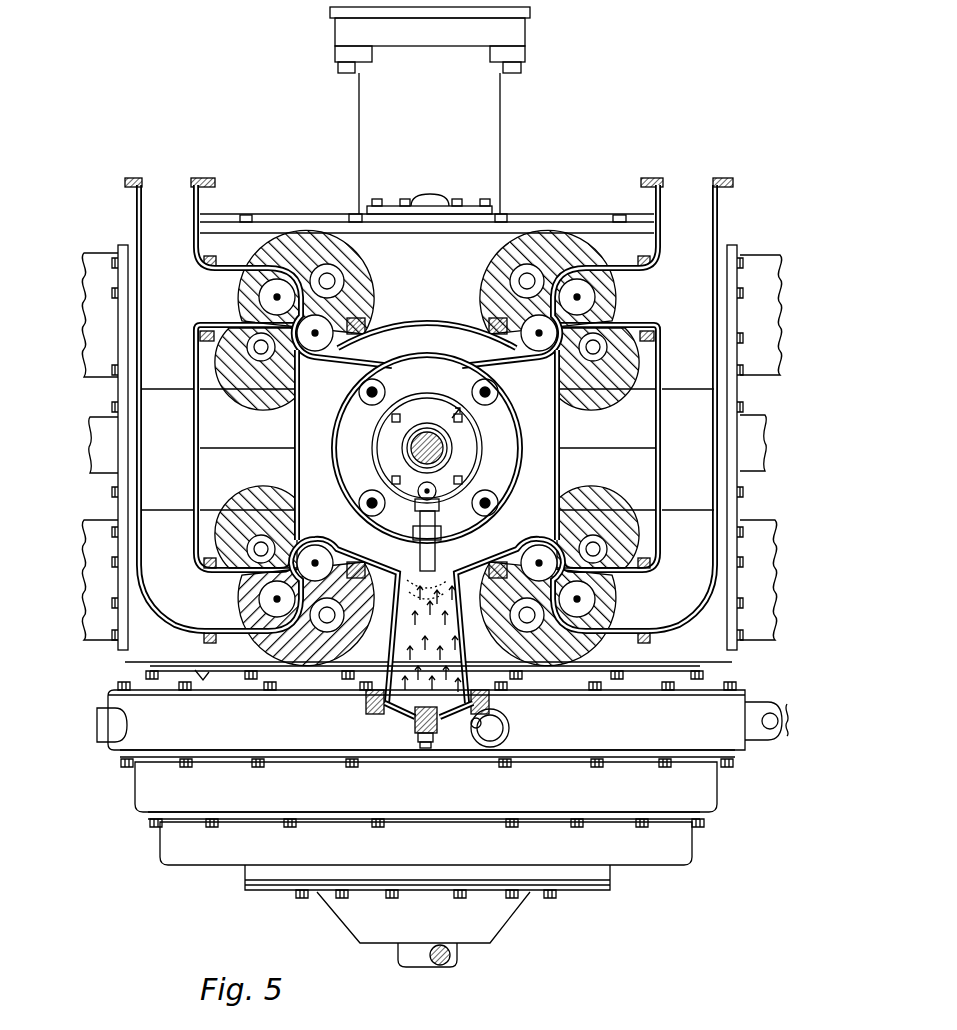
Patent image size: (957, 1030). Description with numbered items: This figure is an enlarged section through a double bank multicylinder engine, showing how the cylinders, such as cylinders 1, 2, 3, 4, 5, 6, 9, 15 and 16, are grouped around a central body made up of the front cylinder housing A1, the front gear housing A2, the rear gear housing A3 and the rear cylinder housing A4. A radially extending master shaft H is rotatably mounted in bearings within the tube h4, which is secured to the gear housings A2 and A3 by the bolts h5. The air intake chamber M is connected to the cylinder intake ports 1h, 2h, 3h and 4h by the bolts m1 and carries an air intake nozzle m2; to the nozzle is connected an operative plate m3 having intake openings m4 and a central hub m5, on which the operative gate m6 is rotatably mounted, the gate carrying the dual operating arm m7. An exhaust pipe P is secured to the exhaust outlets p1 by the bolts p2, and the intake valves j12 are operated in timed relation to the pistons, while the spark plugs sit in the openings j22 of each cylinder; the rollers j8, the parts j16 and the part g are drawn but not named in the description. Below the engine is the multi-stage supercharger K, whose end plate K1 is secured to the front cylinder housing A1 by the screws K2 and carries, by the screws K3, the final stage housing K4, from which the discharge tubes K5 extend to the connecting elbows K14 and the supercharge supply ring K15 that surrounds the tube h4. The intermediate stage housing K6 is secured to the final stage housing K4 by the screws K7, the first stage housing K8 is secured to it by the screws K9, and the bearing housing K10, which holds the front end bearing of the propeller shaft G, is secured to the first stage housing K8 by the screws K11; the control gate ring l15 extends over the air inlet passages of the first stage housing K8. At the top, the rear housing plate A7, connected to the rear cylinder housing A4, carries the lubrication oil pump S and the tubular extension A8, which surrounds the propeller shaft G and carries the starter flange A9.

The starter flange A9 is at (462, 29).
The tubular extension A8 is at (500, 90).
The lubrication oil pump S is at (447, 195).
The rear housing plate A7 is at (600, 230).
The rear cylinder housing A4 is at (352, 240).
The exhaust pipe P is at (157, 330).
The exhaust outlets p1 is at (238, 287).
The bolts p2 is at (195, 335).
The rear gear housing A3 is at (213, 403).
The front gear housing A2 is at (643, 468).
The front cylinder housing A1 is at (143, 642).
The cylinder 16 is at (93, 270).
The cylinder 15 is at (103, 543).
The cylinder 5 is at (763, 260).
The cylinder 6 is at (80, 450).
The tube h4 is at (100, 425).
The bolts h5 is at (113, 427).
The cylinder 1 is at (265, 648).
The cylinder 2 is at (282, 273).
The cylinder 3 is at (548, 265).
The cylinder 4 is at (593, 642).
The cylinder intake port 1h is at (362, 610).
The cylinder intake port 2h is at (372, 272).
The cylinder intake port 3h is at (585, 390).
The cylinder intake port 4h is at (500, 615).
The bolts m1 is at (366, 318).
The air intake chamber M is at (445, 325).
The outer rollers j8 is at (277, 297).
The intake valve j12 is at (314, 330).
The openings j22 is at (344, 274).
The master shaft H is at (427, 423).
The supercharge supply ring K15 is at (500, 458).
The hub bearings j16 is at (376, 390).
The direction arrow g is at (450, 417).
The air intake nozzle m2 is at (370, 698).
The operative plate m3 is at (365, 713).
The operative gate m6 is at (412, 733).
The intake openings m4 is at (412, 722).
The central hub m5 is at (425, 745).
The dual operating arm m7 is at (418, 742).
The connecting elbows K14 is at (458, 732).
The discharge tubes K5 is at (110, 730).
The screws K2 is at (153, 665).
The screws K3 is at (150, 672).
The cylinder 9 is at (205, 684).
The end plate K1 is at (183, 677).
The final stage housing K4 is at (168, 730).
The screws K7 is at (178, 763).
The intermediate stage housing K6 is at (180, 788).
The multi-stage supercharger K is at (717, 797).
The screws K9 is at (213, 823).
The first stage housing K8 is at (220, 852).
The control gate ring l15 is at (293, 893).
The screws K11 is at (388, 897).
The bearing housing K10 is at (495, 912).
The propeller shaft G is at (455, 955).